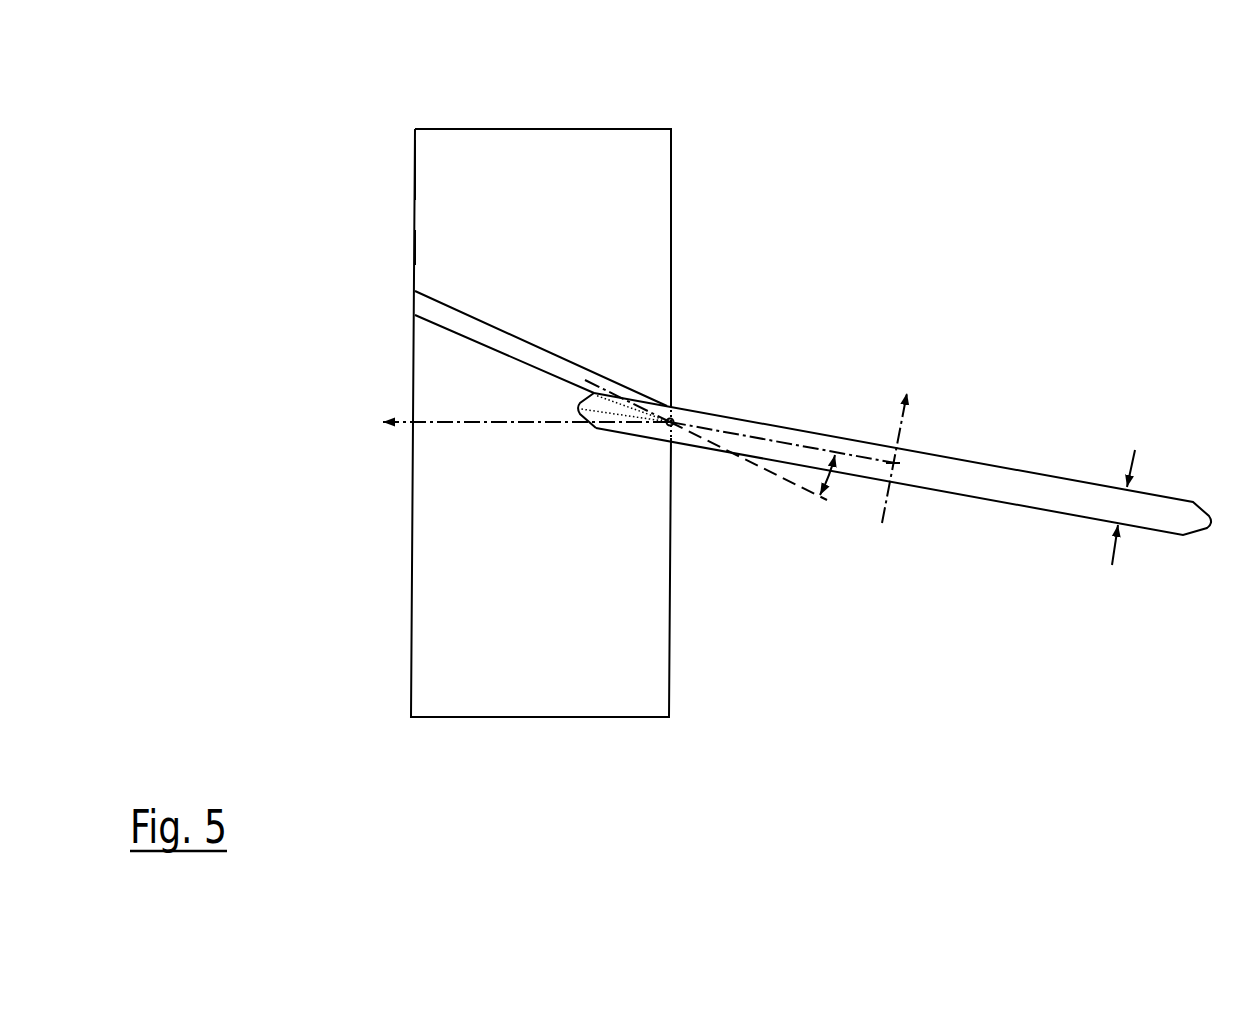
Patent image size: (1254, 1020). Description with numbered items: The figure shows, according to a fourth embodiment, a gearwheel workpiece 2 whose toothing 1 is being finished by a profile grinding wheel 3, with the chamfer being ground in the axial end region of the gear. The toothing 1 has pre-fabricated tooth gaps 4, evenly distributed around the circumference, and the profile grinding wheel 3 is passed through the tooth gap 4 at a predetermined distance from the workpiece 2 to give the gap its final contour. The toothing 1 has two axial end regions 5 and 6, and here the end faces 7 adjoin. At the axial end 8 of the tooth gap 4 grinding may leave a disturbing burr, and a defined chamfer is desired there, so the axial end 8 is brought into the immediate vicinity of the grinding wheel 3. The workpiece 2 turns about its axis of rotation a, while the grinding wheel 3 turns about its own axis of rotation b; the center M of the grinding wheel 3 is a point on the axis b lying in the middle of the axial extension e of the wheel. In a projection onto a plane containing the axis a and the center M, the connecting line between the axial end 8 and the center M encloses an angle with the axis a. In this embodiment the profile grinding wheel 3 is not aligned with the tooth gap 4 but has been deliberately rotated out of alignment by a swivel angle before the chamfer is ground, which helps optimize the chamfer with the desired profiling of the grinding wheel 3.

The toothing 1 is at (550, 176).
The workpiece 2 is at (433, 197).
The profile grinding wheel 3 is at (1063, 495).
The tooth gap 4 is at (487, 335).
The axial end region 5 is at (668, 125).
The axial end region 6 is at (415, 126).
The end face 7 is at (413, 247).
The axial end of the tooth gap 8 is at (673, 427).
The axis of rotation of the workpiece a is at (505, 419).
The axis of rotation of the grinding wheel b is at (901, 432).
The center of the grinding wheel M is at (898, 467).
The axial extension of the grinding wheel e is at (1140, 501).